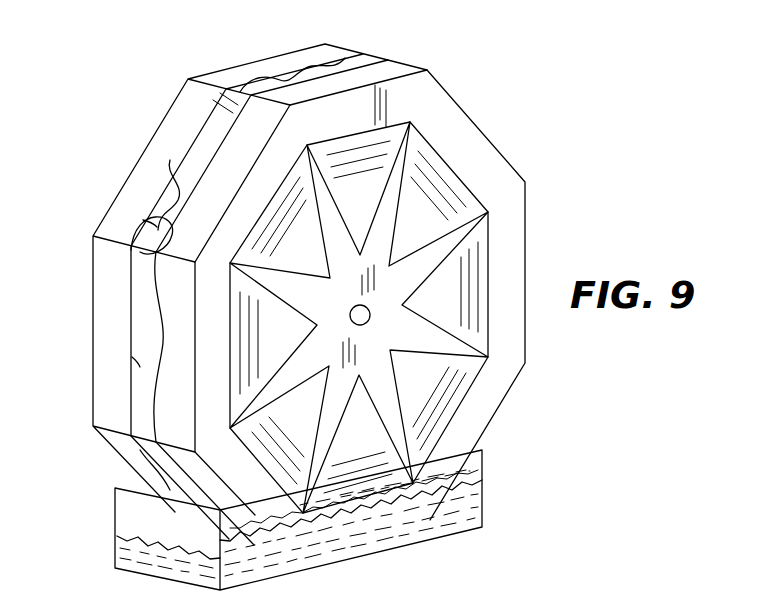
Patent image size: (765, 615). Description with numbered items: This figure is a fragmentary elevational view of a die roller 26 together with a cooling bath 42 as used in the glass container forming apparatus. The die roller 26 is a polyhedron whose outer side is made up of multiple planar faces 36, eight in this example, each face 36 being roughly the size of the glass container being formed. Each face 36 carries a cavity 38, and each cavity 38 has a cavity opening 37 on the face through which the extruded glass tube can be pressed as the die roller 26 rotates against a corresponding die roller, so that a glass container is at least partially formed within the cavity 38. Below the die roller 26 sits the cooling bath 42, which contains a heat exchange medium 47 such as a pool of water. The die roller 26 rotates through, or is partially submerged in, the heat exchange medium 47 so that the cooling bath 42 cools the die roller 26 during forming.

The die roller 26 is at (445, 117).
The planar face 36 is at (243, 70).
The cavity opening 37 is at (288, 78).
The cavity 38 is at (333, 70).
The cooling bath 42 is at (483, 477).
The heat exchange medium 47 is at (133, 562).